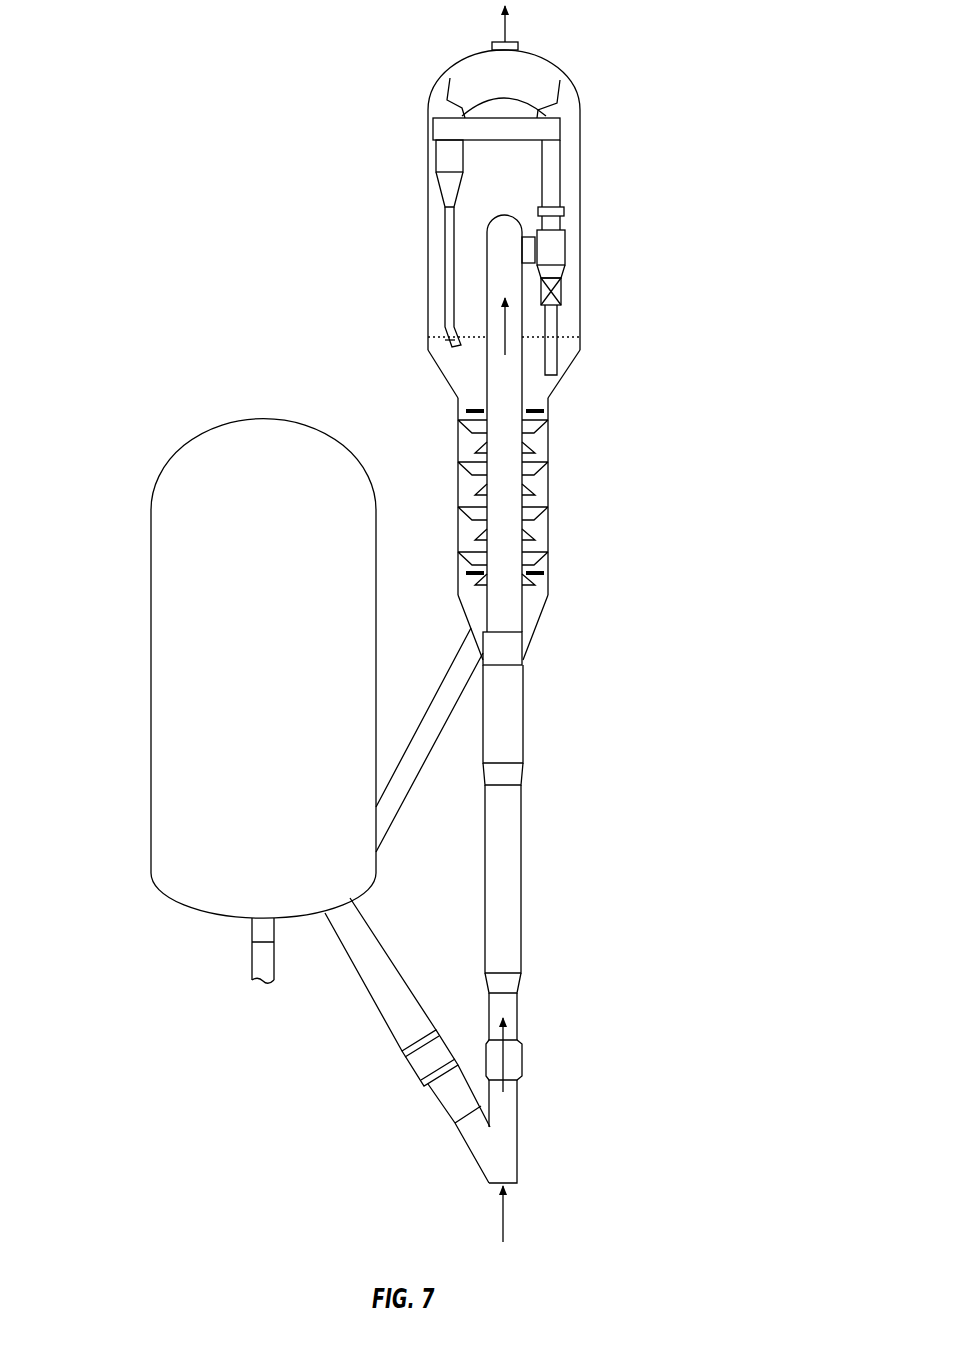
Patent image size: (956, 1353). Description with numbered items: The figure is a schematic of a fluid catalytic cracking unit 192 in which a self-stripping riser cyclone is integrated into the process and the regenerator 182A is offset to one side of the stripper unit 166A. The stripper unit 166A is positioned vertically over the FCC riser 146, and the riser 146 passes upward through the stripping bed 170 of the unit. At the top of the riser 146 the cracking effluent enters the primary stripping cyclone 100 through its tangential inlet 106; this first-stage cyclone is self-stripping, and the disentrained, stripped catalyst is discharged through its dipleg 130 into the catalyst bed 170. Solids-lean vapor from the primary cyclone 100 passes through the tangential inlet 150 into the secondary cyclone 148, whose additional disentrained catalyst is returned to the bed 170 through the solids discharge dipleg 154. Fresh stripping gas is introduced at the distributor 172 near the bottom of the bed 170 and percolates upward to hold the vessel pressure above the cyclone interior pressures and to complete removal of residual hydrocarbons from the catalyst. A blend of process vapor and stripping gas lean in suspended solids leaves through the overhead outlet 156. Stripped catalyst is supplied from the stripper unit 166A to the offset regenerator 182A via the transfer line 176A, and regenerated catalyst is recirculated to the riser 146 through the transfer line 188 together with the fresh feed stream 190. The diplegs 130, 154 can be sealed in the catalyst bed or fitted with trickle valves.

The primary stripping cyclone 100 is at (588, 222).
The tangential inlet 106 is at (503, 405).
The dipleg 130 is at (592, 337).
The FCC riser 146 is at (543, 907).
The secondary cyclone 148 is at (414, 243).
The tangential inlet 150 is at (524, 96).
The solids discharge dipleg 154 is at (406, 359).
The overhead outlet 156 is at (534, 26).
The stripper unit 166A is at (609, 217).
The catalyst bed 170 is at (536, 513).
The distributor 172 is at (532, 521).
The transfer line 176A is at (429, 732).
The regenerator 182A is at (217, 701).
The transfer line 188 is at (407, 1040).
The fresh feed stream 190 is at (543, 1226).
The FCC unit 192 is at (223, 193).